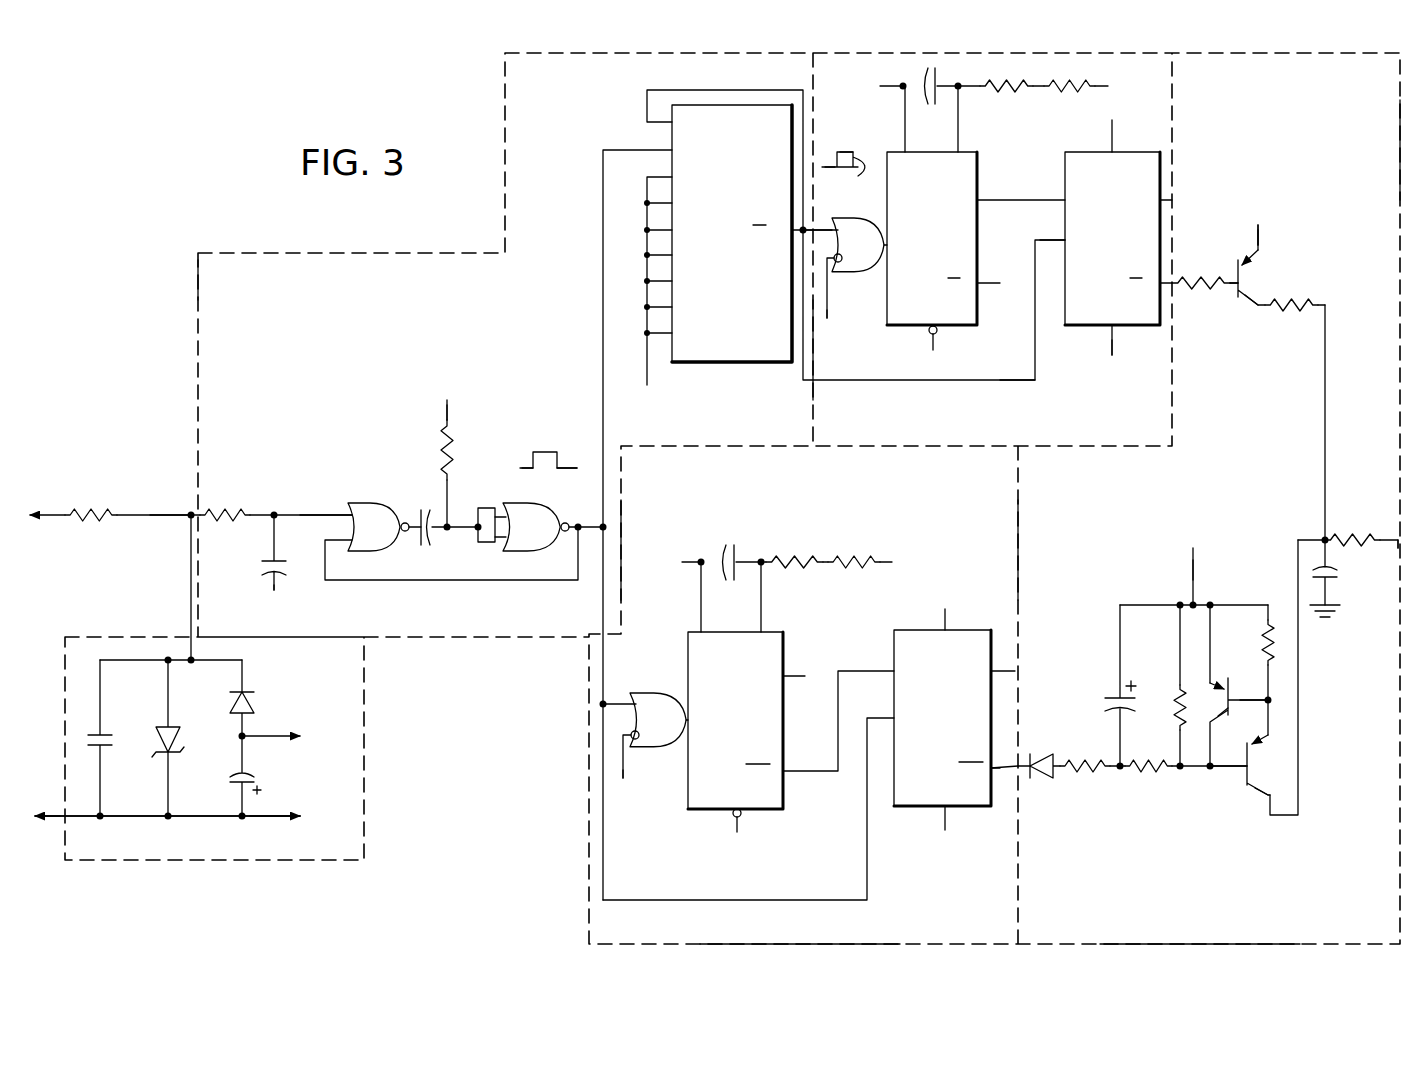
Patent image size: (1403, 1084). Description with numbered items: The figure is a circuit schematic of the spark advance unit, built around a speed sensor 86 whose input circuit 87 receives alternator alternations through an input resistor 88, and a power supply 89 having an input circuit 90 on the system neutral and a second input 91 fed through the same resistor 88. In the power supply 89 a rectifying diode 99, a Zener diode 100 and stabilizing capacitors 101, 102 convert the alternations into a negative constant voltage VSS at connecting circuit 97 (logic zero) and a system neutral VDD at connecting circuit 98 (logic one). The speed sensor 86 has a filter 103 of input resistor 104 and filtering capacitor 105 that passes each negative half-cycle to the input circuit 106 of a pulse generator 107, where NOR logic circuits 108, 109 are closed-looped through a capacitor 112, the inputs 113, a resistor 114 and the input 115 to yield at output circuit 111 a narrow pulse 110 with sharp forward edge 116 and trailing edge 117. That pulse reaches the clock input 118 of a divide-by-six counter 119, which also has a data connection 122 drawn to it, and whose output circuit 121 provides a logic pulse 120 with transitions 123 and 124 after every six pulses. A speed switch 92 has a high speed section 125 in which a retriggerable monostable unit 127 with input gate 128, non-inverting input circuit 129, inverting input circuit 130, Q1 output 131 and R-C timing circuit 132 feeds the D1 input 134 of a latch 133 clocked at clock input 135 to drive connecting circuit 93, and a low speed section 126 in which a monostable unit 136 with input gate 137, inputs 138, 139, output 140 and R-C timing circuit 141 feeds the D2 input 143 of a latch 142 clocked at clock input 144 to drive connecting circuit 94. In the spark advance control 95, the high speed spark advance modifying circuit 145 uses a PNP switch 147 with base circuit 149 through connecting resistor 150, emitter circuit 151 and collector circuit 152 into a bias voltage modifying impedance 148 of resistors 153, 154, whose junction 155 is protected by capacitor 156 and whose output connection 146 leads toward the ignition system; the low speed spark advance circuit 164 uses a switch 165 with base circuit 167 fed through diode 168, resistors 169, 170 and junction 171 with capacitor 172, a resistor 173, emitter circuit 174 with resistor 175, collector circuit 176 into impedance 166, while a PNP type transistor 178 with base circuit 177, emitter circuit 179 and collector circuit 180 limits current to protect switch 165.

The speed sensor 86 is at (198, 290).
The input circuit 87 is at (165, 512).
The input resistor 88 is at (94, 508).
The power supply 89 is at (364, 778).
The input circuit 90 is at (60, 820).
The second input 91 is at (191, 590).
The speed switch 92 is at (783, 932).
The connecting circuit 93 is at (1168, 282).
The connecting circuit 94 is at (1016, 790).
The spark advance control 95 is at (1130, 935).
The connecting circuit 97 is at (272, 725).
The connecting circuit 98 is at (280, 588).
The rectifying diode 99 is at (250, 700).
The Zener diode 100 is at (174, 722).
The stabilizing capacitor 101 is at (99, 734).
The stabilizing capacitor 102 is at (228, 783).
The filter 103 is at (240, 450).
The input resistor 104 is at (226, 510).
The filtering capacitor 105 is at (269, 562).
The input circuit 106 is at (324, 512).
The pulse generator 107 is at (289, 464).
The NOR logic circuit 108 is at (378, 527).
The NOR logic circuit 109 is at (536, 527).
The waveform 110 is at (550, 452).
The output circuit 111 is at (570, 522).
The capacitor 112 is at (428, 545).
The inputs 113 is at (492, 508).
The resistor 114 is at (440, 444).
The input 115 is at (325, 540).
The forward edge 116 is at (532, 468).
The trailing edge 117 is at (560, 468).
The clock input 118 is at (604, 148).
The divide-by-six counter 119 is at (716, 258).
The logic pulse 120 is at (854, 152).
The output circuit 121 is at (796, 227).
The data input line 122 is at (658, 122).
The transition 123 is at (826, 156).
The transition 124 is at (843, 173).
The high speed section 125 is at (883, 359).
The low speed section 126 is at (785, 529).
The retriggerable monostable unit 127 is at (1047, 382).
The input gate 128 is at (859, 245).
The non-inverting input circuit 129 is at (836, 224).
The inverting input circuit 130 is at (830, 279).
The Q1 output 131 is at (990, 195).
The R-C timing circuit 132 is at (915, 75).
The latch 133 is at (1148, 378).
The D1 input 134 is at (1061, 195).
The clock input 135 is at (1060, 238).
The retriggerable monostable unit 136 is at (711, 506).
The input gate 137 is at (659, 720).
The non-inverting input circuit 138 is at (622, 700).
The inverting input 139 is at (628, 735).
The output 140 is at (820, 768).
The R-C timing circuit 141 is at (708, 522).
The latch 142 is at (972, 570).
The D2 input 143 is at (874, 668).
The clock input 144 is at (882, 716).
The high speed spark advance modifying circuit 145 is at (1342, 161).
The output line 146 is at (1355, 634).
The switch 147 is at (1294, 268).
The bias voltage modifying impedance 148 is at (1362, 338).
The base circuit 149 is at (1232, 275).
The connecting resistor 150 is at (1192, 289).
The emitter circuit 151 is at (1260, 244).
The collector circuit 152 is at (1252, 295).
The resistor 153 is at (1300, 309).
The resistor 154 is at (1368, 536).
The junction 155 is at (1323, 538).
The capacitor 156 is at (1338, 568).
The low speed spark advance circuit 164 is at (1079, 525).
The switch 165 is at (1278, 766).
The bias voltage modifying impedance 166 is at (1322, 643).
The base circuit 167 is at (1228, 770).
The diode 168 is at (1042, 752).
The resistor 169 is at (1078, 772).
The resistor 170 is at (1155, 771).
The junction 171 is at (1122, 772).
The capacitor 172 is at (1110, 690).
The resistor 173 is at (1176, 690).
The emitter circuit 174 is at (1271, 738).
The resistor 175 is at (1271, 628).
The collector circuit 176 is at (1264, 780).
The base circuit 177 is at (1253, 704).
The PNP type transistor 178 is at (1219, 652).
The emitter circuit 179 is at (1226, 694).
The collector circuit 180 is at (1238, 716).